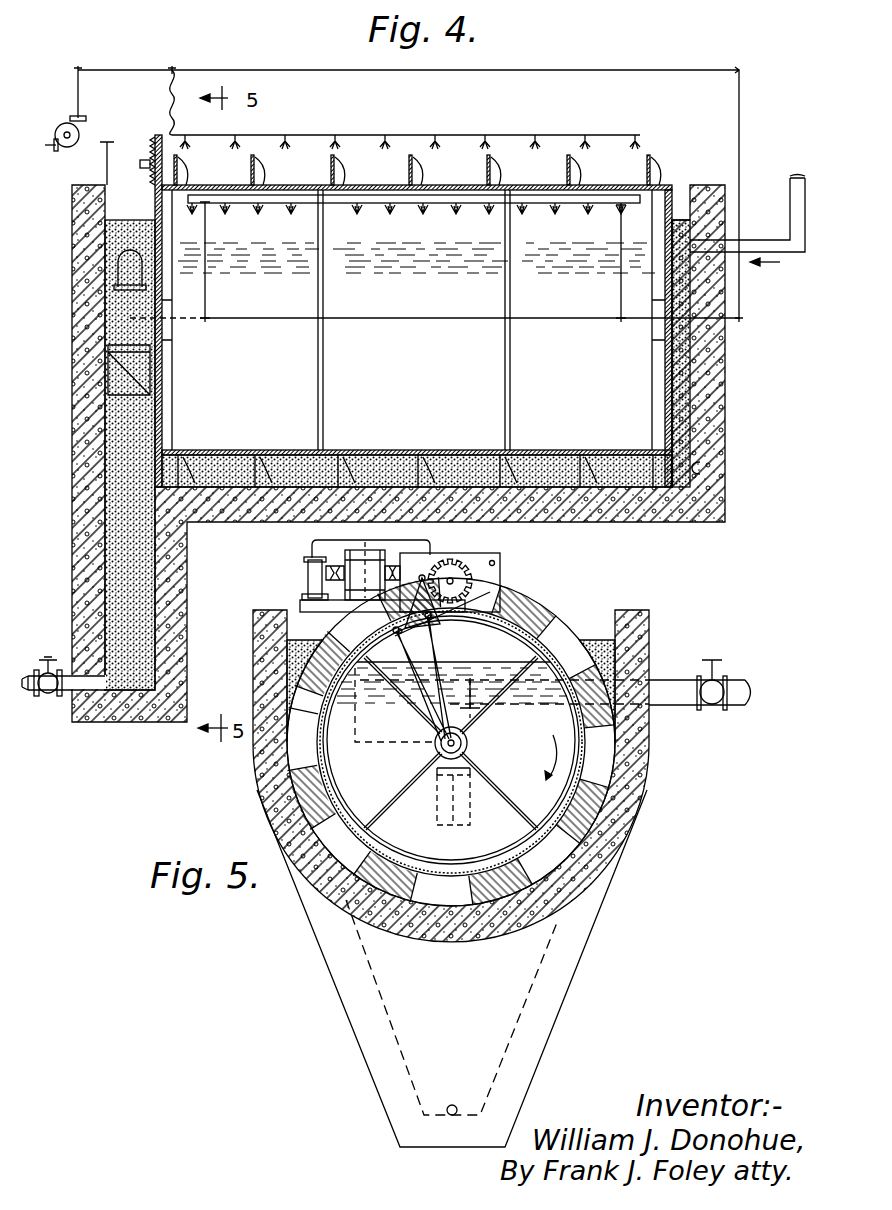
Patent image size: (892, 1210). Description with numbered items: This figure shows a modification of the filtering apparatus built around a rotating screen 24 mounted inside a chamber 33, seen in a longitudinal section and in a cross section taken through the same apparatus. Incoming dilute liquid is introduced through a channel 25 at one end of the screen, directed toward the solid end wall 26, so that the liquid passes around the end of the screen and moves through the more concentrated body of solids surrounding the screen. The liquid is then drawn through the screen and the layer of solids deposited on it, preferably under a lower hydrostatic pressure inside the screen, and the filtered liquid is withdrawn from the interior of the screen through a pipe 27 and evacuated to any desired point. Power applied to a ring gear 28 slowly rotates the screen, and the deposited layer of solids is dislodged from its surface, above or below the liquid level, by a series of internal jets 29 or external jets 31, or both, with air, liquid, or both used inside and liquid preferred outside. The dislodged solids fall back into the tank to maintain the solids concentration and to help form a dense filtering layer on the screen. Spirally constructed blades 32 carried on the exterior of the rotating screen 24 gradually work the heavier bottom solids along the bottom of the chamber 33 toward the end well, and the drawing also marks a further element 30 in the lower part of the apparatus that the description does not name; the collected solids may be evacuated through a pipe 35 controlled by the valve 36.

In FIG. 4, the rotating screen 24 is at (430, 205).
In FIG. 5, the rotating screen 24 is at (330, 778).
In FIG. 4, the channel 25 is at (754, 240).
In FIG. 4, the solid end wall 26 is at (685, 378).
In FIG. 4, the pipe 27 is at (130, 318).
In FIG. 5, the pipe 27 is at (675, 700).
In FIG. 5, the ring gear 28 is at (496, 602).
In FIG. 4, the internal jets 29 is at (235, 205).
In FIG. 5, the internal jets 29 is at (410, 628).
In FIG. 4, the drain chamber 30 is at (140, 660).
In FIG. 5, the drain chamber 30 is at (520, 1012).
In FIG. 4, the external jets 31 is at (288, 135).
In FIG. 5, the external jets 31 is at (424, 576).
In FIG. 4, the spirally constructed blades 32 is at (604, 480).
In FIG. 5, the spirally constructed blades 32 is at (555, 858).
In FIG. 4, the chamber 33 is at (700, 468).
In FIG. 4, the pipe 35 is at (60, 692).
In FIG. 5, the pipe 35 is at (440, 1112).
In FIG. 4, the valve 36 is at (48, 659).